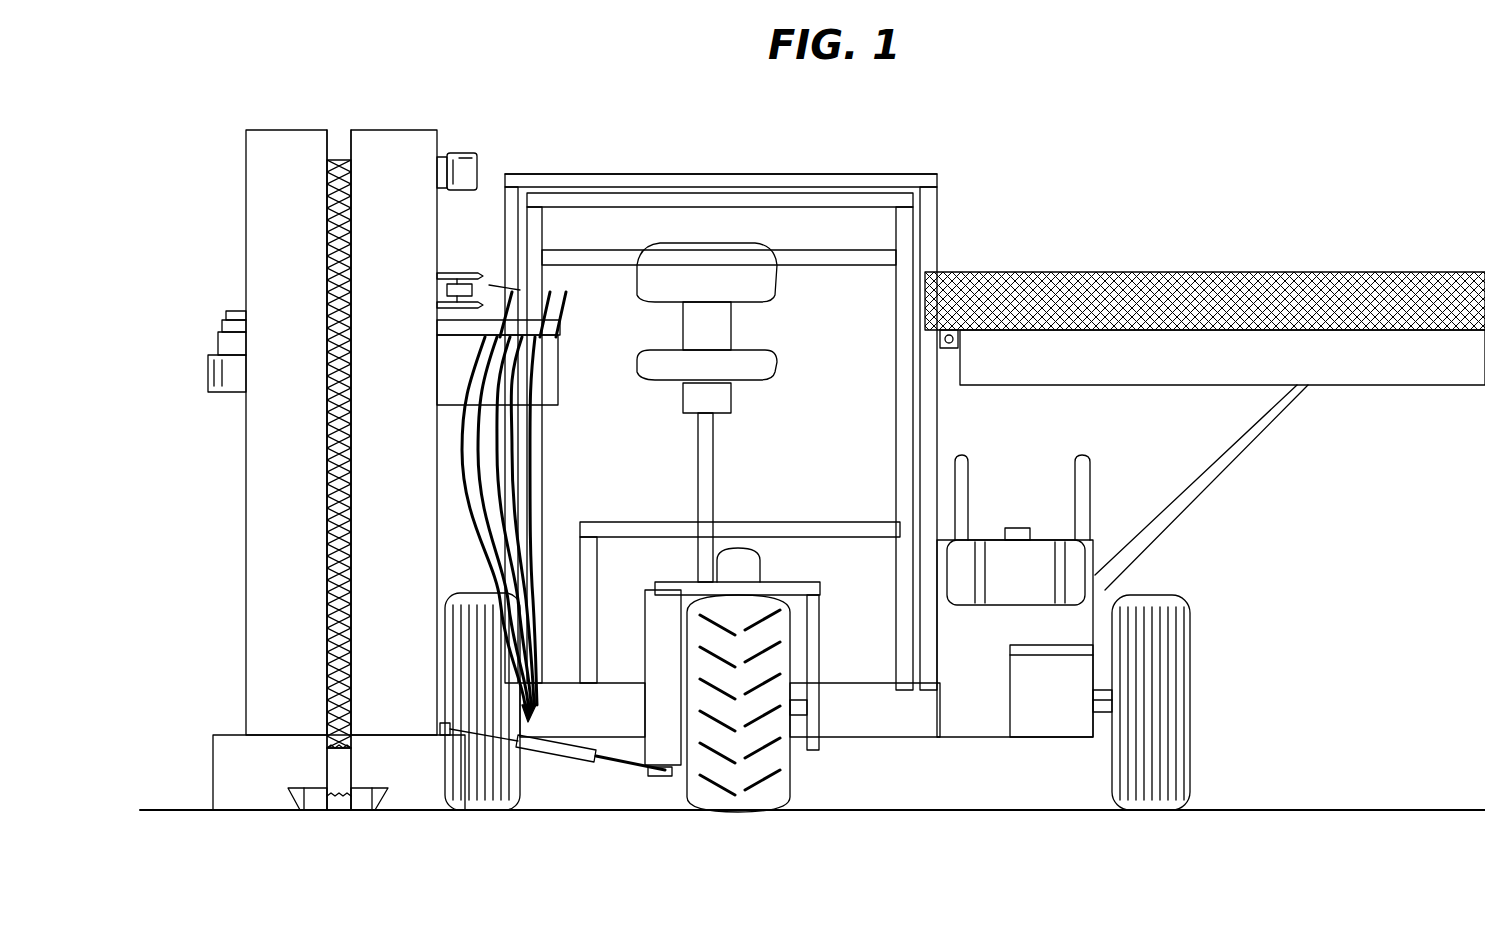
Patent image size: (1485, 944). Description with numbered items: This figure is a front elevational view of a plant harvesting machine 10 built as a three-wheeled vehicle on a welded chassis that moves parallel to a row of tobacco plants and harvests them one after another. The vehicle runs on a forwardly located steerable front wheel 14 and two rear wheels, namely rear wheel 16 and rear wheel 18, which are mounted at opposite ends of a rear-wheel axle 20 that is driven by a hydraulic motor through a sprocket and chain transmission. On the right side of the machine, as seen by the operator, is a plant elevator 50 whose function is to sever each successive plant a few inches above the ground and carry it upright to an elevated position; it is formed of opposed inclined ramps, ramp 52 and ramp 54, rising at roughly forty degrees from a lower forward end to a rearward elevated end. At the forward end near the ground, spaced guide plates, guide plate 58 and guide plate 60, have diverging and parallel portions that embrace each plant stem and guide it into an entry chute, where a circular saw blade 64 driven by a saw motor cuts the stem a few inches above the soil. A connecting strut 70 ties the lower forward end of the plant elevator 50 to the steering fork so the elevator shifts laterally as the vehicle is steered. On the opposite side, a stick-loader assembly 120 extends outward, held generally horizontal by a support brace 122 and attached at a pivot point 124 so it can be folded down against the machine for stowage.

The plant harvesting machine 10 is at (1062, 162).
The steerable front wheel 14 is at (792, 768).
The rear wheel 16 is at (520, 790).
The rear wheel 18 is at (1190, 632).
The rear-wheel axle 20 is at (1108, 718).
The plant elevator 50 is at (222, 511).
The ramp 52 is at (298, 583).
The ramp 54 is at (409, 583).
The guide plate 58 is at (318, 789).
The guide plate 60 is at (386, 789).
The circular saw blade 64 is at (343, 812).
The connecting strut 70 is at (580, 745).
The stick-loader assembly 120 is at (1304, 250).
The support brace 122 is at (1227, 458).
The pivot point 124 is at (949, 348).